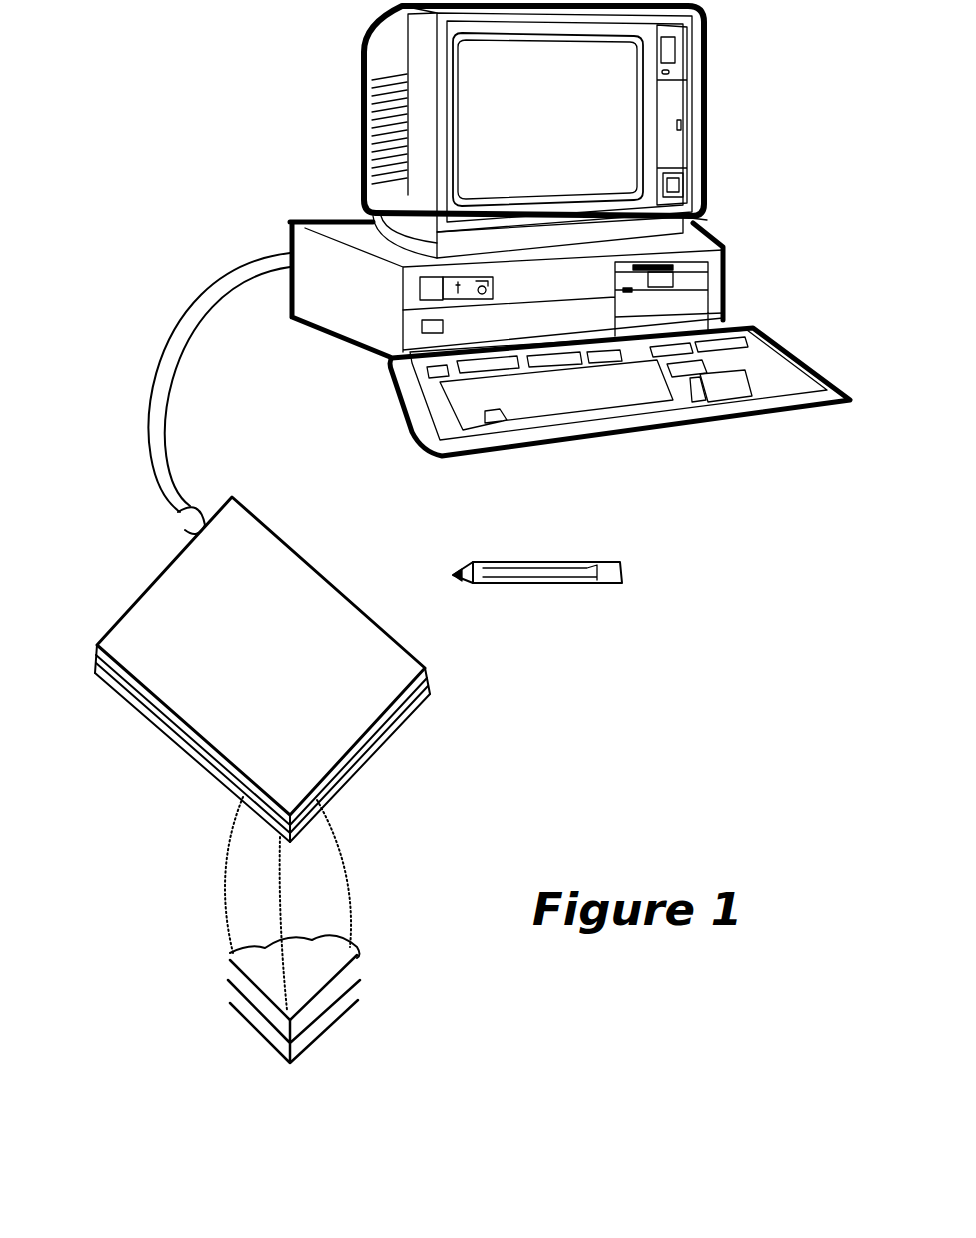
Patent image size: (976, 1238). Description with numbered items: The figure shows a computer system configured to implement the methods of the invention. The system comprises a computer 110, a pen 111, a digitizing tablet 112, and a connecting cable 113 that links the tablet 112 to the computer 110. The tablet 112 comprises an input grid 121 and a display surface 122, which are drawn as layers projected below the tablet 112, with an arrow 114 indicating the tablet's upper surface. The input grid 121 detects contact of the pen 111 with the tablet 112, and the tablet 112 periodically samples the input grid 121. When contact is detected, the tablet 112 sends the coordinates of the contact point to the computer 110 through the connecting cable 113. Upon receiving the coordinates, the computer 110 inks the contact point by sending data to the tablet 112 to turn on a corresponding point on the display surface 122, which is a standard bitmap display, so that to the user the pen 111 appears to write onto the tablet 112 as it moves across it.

The computer 110 is at (717, 242).
The pen 111 is at (553, 562).
The digitizing tablet 112 is at (127, 687).
The connecting cable 113 is at (180, 332).
The pad writing surface 114 is at (165, 625).
The input grid 121 is at (247, 988).
The display surface 122 is at (277, 1040).